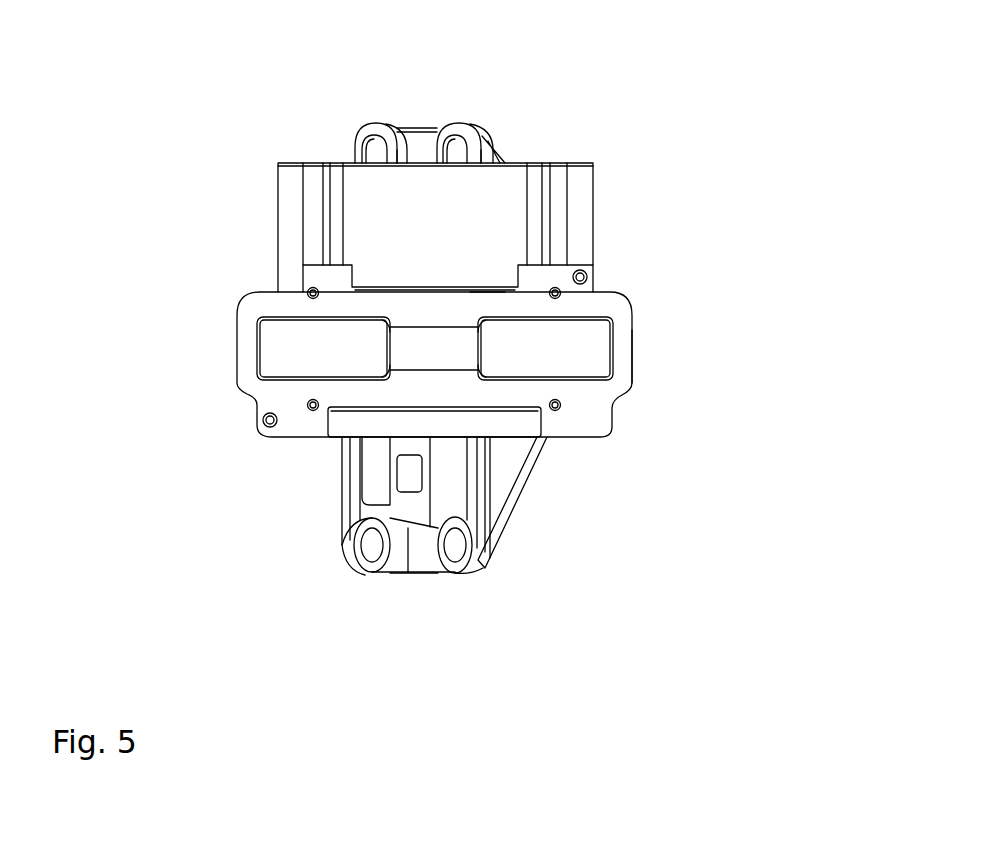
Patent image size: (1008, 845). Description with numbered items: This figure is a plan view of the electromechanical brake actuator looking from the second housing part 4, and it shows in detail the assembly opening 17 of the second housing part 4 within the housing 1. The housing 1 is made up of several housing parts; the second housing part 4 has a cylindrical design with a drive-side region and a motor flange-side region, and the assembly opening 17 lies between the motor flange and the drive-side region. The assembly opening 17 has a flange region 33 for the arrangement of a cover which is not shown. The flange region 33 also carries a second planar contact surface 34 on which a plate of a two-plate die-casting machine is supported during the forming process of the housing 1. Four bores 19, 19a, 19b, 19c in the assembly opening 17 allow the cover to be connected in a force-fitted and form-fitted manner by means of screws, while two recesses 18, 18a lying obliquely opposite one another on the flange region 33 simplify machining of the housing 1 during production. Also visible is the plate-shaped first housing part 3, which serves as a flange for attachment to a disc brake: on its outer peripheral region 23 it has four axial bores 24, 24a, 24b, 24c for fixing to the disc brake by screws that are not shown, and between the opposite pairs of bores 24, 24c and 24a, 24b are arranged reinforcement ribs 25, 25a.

The housing 1 is at (205, 167).
The first housing part 3 is at (497, 140).
The second housing part 4 is at (277, 240).
The assembly opening 17 is at (591, 342).
The recess 18 is at (588, 278).
The recess 18a is at (264, 423).
The bore 19 is at (561, 406).
The bore 19a is at (308, 403).
The bore 19b is at (262, 294).
The bore 19c is at (561, 295).
The outer peripheral region 23 is at (540, 452).
The axial bore 24 is at (460, 562).
The axial bore 24a is at (360, 568).
The axial bore 24b is at (355, 125).
The axial bore 24c is at (462, 130).
The reinforcement rib 25 is at (360, 550).
The reinforcement rib 25a is at (467, 485).
The flange region 33 is at (633, 377).
The second planar contact surface 34 is at (487, 297).